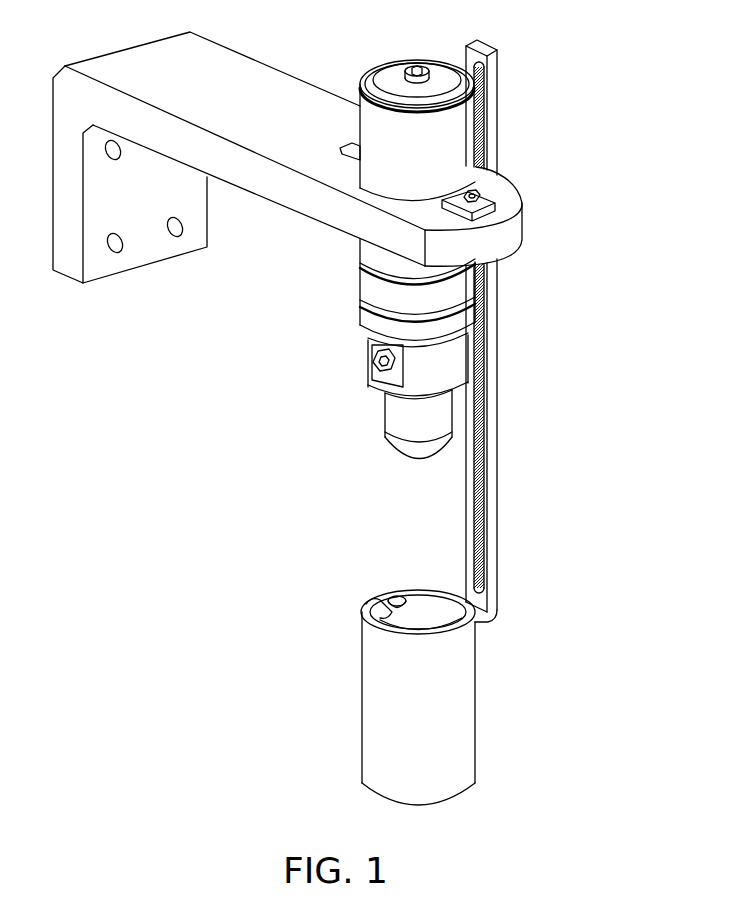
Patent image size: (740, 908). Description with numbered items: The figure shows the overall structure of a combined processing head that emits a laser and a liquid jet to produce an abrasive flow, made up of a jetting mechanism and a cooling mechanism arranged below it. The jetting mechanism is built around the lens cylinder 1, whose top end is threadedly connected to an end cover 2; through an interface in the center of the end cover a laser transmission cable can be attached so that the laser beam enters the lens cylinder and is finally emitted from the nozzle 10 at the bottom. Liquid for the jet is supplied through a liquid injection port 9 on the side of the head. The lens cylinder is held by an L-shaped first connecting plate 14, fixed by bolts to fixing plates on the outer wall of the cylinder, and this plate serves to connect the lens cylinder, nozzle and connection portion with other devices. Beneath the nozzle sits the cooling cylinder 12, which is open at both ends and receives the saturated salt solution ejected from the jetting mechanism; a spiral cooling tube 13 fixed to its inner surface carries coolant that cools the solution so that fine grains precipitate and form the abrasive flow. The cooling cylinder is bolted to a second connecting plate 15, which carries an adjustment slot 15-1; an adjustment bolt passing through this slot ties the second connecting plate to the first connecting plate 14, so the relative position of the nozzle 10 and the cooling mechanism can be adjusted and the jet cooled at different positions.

The lens cylinder 1 is at (420, 153).
The end cover 2 is at (402, 78).
The liquid injection port 9 is at (370, 362).
The nozzle 10 is at (397, 412).
The cooling cylinder 12 is at (427, 710).
The cooling tube 13 is at (395, 602).
The first connecting plate 14 is at (282, 148).
The second connecting plate 15 is at (488, 585).
The adjustment slot 15-1 is at (477, 457).